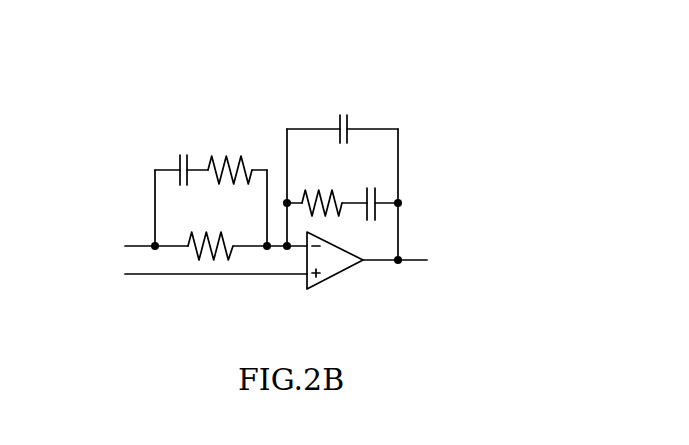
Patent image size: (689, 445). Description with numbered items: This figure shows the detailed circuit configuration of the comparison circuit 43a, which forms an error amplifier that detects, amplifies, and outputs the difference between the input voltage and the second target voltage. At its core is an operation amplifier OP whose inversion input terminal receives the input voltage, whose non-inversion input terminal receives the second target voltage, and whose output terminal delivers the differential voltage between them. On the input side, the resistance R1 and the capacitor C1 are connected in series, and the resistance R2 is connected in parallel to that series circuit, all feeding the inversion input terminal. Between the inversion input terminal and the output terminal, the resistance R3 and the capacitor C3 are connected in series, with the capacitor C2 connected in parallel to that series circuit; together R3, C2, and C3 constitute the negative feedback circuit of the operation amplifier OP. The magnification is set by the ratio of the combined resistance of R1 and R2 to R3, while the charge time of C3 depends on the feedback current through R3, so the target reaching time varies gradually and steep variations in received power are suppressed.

The comparison circuit 43a is at (423, 90).
The capacitor C1 is at (181, 187).
The resistance R1 is at (237, 187).
The resistance R2 is at (210, 234).
The capacitor C2 is at (342, 174).
The resistance R3 is at (314, 190).
The capacitor C3 is at (370, 192).
The operation amplifier OP is at (336, 276).